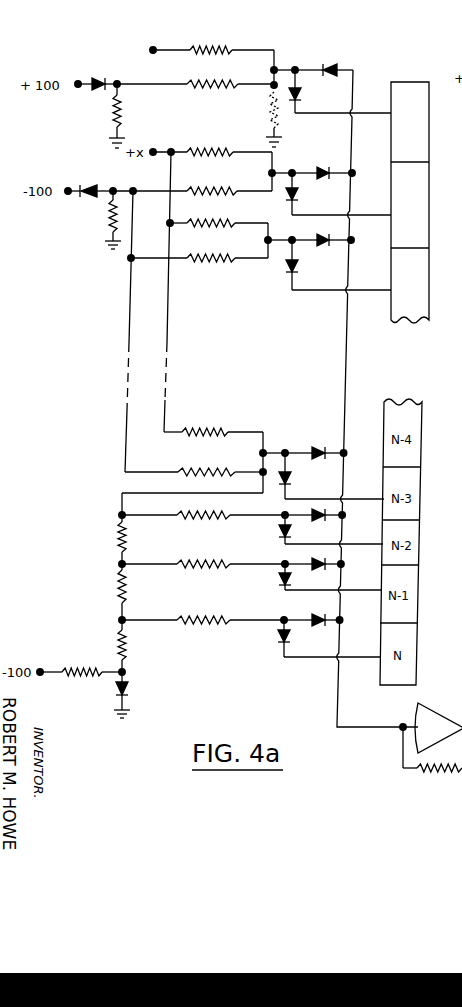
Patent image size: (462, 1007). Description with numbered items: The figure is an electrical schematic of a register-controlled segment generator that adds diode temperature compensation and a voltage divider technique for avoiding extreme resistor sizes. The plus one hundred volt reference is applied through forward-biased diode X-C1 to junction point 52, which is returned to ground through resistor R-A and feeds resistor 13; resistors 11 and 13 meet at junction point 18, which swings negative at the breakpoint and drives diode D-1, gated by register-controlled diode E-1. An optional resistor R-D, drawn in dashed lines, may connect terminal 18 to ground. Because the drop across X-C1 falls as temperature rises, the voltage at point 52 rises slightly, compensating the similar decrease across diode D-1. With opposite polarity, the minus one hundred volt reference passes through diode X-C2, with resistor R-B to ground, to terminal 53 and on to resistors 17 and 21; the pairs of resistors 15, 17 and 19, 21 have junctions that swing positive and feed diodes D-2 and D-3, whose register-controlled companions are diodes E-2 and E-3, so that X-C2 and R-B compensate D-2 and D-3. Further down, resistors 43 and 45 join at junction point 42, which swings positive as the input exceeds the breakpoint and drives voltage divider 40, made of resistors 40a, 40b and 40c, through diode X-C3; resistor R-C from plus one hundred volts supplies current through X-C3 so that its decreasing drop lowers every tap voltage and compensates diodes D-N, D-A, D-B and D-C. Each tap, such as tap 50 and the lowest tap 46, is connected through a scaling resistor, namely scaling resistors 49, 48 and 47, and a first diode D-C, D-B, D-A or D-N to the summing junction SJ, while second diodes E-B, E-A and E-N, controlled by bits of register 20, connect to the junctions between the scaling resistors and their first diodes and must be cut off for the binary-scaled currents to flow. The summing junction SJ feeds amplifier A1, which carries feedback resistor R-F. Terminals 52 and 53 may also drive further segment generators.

The resistor 11 is at (195, 47).
The resistor 13 is at (194, 84).
The resistor 15 is at (194, 152).
The resistor 17 is at (196, 191).
The junction point 18 is at (276, 68).
The resistor 19 is at (199, 222).
The register 20 is at (402, 185).
The resistor 21 is at (199, 256).
The voltage divider 40 is at (116, 592).
The resistor 40a is at (128, 539).
The resistor 40b is at (125, 605).
The resistor 40c is at (128, 647).
The junction point 42 is at (266, 452).
The resistor 43 is at (190, 427).
The resistor 45 is at (188, 460).
The tap 46 is at (120, 619).
The scaling resistor 47 is at (206, 615).
The scaling resistor 48 is at (182, 561).
The scaling resistor 49 is at (178, 504).
The tap 50 is at (120, 563).
The junction point 52 is at (121, 83).
The terminal 53 is at (145, 172).
The diode X-C1 is at (103, 74).
The diode X-C2 is at (88, 198).
The diode X-C3 is at (138, 693).
The resistor R-A is at (129, 116).
The resistor R-B is at (110, 226).
The resistor R-C is at (81, 662).
The resistor R-D is at (268, 127).
The feedback resistor R-F is at (432, 761).
The diode D-1 is at (330, 67).
The diode D-2 is at (319, 170).
The diode D-3 is at (322, 235).
The diode D-C is at (312, 452).
The diode D-B is at (312, 521).
The diode D-A is at (330, 579).
The diode D-N is at (304, 619).
The diode E-1 is at (300, 92).
The diode E-2 is at (297, 197).
The diode E-3 is at (298, 268).
The diode E-B is at (282, 528).
The diode E-A is at (281, 578).
The diode E-N is at (279, 638).
The amplifier A1 is at (438, 728).
The summing junction SJ is at (337, 706).